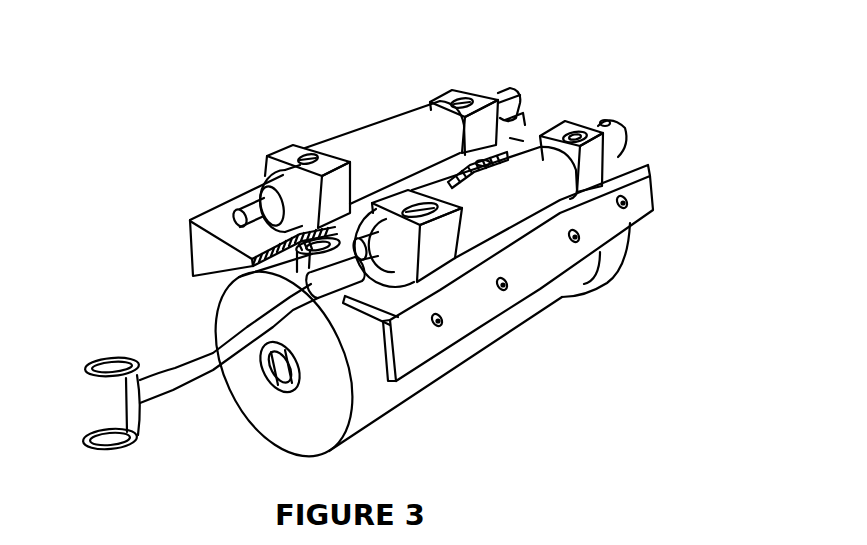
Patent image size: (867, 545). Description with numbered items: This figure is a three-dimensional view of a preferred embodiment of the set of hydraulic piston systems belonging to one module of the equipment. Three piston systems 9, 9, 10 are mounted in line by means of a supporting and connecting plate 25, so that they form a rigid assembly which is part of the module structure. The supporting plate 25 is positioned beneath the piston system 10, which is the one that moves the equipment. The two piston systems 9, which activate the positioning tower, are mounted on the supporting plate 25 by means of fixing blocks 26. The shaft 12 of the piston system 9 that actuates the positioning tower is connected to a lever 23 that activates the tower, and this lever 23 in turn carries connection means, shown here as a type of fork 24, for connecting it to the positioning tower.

The piston system 9 is at (351, 165).
The piston system 10 is at (493, 330).
The shaft 12 is at (247, 217).
The lever 23 is at (200, 367).
The fork 24 is at (100, 355).
The supporting and connecting plate 25 is at (627, 162).
The fixing block 26 is at (570, 117).